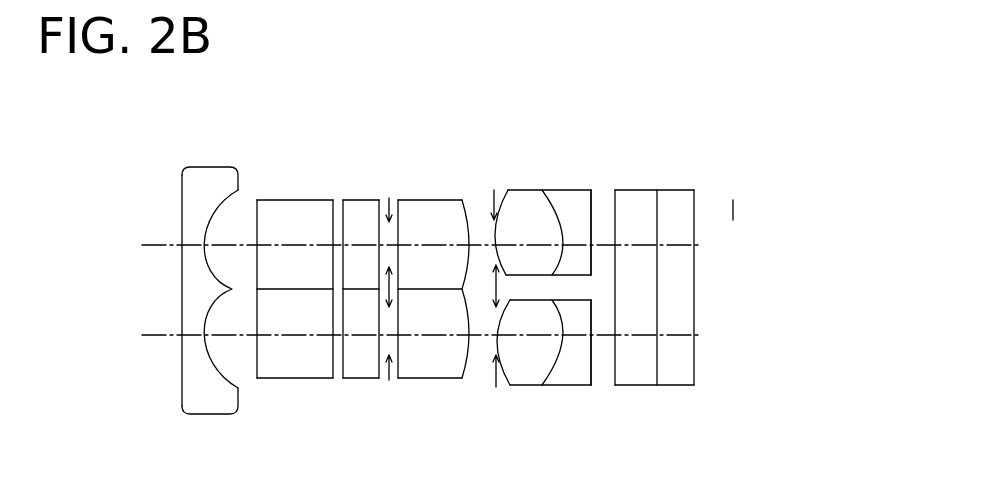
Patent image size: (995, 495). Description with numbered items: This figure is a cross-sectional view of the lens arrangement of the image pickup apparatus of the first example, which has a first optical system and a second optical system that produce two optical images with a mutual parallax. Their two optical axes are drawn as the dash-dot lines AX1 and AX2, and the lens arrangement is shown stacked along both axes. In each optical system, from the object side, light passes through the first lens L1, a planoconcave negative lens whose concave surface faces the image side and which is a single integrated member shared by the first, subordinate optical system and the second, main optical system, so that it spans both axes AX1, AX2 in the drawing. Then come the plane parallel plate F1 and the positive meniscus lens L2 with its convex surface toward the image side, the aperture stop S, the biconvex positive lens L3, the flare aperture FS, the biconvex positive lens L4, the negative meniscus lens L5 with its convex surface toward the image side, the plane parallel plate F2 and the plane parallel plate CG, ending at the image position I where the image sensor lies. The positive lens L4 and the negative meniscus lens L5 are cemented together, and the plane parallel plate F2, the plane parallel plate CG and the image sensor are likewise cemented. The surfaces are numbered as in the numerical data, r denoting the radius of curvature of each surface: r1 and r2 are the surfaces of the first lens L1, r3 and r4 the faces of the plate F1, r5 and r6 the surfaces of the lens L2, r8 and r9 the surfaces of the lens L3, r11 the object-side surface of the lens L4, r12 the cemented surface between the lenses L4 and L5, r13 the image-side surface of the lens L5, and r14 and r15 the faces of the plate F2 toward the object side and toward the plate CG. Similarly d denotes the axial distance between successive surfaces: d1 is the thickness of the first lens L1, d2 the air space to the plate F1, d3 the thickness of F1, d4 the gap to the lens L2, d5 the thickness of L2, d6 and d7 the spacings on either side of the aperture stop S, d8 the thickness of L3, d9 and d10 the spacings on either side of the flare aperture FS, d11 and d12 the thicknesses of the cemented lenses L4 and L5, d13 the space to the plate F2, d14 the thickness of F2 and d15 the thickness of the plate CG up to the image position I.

The first optical axis AX1 is at (157, 244).
The second optical axis AX2 is at (157, 334).
The first lens L1 is at (197, 167).
The plane parallel plate F1 is at (294, 200).
The positive meniscus lens L2 is at (357, 200).
The aperture stop S is at (388, 198).
The biconvex positive lens L3 is at (432, 200).
The flare aperture FS is at (493, 190).
The biconvex positive lens L4 is at (500, 212).
The negative meniscus lens L5 is at (573, 190).
The plane parallel plate F2 is at (637, 190).
The plane parallel plate CG is at (685, 190).
The image plane I is at (725, 213).
The radius of curvature of the first lens surface r1 is at (180, 191).
The radius of curvature of the second lens surface r2 is at (218, 206).
The radius of curvature of the third surface r3 is at (257, 203).
The radius of curvature of the fourth surface r4 is at (333, 207).
The radius of curvature of the fifth surface r5 is at (343, 202).
The radius of curvature of the sixth surface r6 is at (379, 210).
The radius of curvature of the eighth surface r8 is at (399, 218).
The radius of curvature of the ninth surface r9 is at (468, 213).
The radius of curvature of the eleventh surface r11 is at (497, 207).
The radius of curvature of the twelfth surface r12 is at (550, 190).
The radius of curvature of the thirteenth surface r13 is at (592, 205).
The radius of curvature of the fourteenth surface r14 is at (614, 202).
The radius of curvature of the fifteenth surface r15 is at (658, 212).
The axial distance d1 is at (193, 247).
The axial distance d2 is at (239, 247).
The axial distance d3 is at (303, 247).
The axial distance d4 is at (337, 247).
The axial distance d5 is at (362, 247).
The axial distance d6 is at (384, 247).
The axial distance d7 is at (397, 247).
The axial distance d8 is at (432, 247).
The axial distance d9 is at (480, 247).
The axial distance d10 is at (496, 247).
The axial distance d11 is at (525, 247).
The axial distance d12 is at (573, 247).
The axial distance d13 is at (603, 247).
The axial distance d14 is at (635, 247).
The axial distance d15 is at (677, 247).